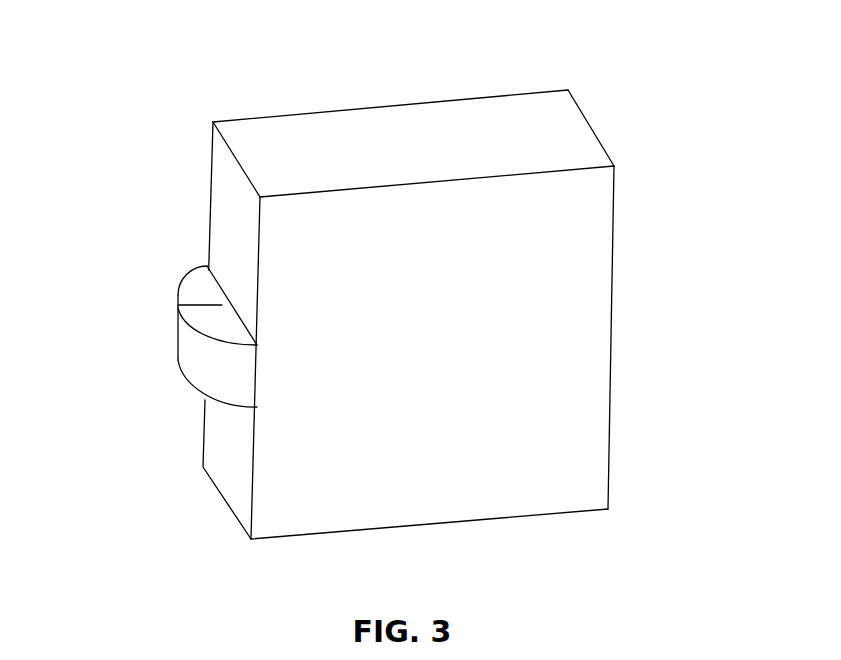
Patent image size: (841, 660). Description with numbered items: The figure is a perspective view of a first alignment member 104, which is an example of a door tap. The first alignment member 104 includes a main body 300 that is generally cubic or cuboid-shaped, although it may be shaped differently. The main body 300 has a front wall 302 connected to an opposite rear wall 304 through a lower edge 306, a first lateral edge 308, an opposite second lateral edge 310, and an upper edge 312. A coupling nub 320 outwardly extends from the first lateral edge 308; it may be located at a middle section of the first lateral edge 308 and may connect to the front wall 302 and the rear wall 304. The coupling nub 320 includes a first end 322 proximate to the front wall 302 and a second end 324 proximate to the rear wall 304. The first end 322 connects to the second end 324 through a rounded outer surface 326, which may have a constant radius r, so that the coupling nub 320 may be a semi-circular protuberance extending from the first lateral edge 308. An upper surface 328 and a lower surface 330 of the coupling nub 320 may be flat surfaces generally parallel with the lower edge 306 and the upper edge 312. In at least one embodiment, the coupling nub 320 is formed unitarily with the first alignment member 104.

The first alignment member 104 is at (150, 57).
The main body 300 is at (586, 103).
The front wall 302 is at (542, 323).
The rear wall 304 is at (305, 112).
The lower edge 306 is at (455, 523).
The first lateral edge 308 is at (225, 215).
The second lateral edge 310 is at (615, 247).
The upper edge 312 is at (482, 133).
The coupling nub 320 is at (183, 353).
The first end 322 is at (252, 368).
The second end 324 is at (205, 268).
The rounded outer surface 326 is at (176, 330).
The upper surface 328 is at (187, 292).
The lower surface 330 is at (218, 405).
The radius r is at (207, 302).